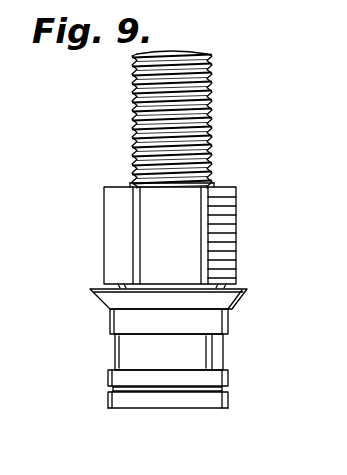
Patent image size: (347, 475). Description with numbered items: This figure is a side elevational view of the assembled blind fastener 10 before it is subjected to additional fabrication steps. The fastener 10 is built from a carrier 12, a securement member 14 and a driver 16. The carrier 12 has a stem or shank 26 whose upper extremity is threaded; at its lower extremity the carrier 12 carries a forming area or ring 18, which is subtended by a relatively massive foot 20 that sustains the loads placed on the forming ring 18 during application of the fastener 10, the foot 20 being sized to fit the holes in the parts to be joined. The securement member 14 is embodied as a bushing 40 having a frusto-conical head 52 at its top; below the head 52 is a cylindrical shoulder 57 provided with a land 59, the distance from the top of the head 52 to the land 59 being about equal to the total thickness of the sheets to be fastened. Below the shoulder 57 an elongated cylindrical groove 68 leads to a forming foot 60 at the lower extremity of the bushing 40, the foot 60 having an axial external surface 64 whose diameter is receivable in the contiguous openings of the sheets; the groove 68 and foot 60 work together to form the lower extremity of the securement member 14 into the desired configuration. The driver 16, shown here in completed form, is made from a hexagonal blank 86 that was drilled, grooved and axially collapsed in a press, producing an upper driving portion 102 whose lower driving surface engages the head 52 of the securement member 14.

The blind fastener 10 is at (172, 407).
The carrier 12 is at (214, 136).
The securement member 14 is at (233, 350).
The driver 16 is at (240, 254).
The forming area or ring 18 is at (111, 388).
The foot 20 is at (140, 410).
The stem or shank 26 is at (130, 137).
The bushing 40 is at (108, 355).
The frusto-conical head 52 is at (242, 303).
The cylindrical shoulder 57 is at (108, 316).
The land 59 is at (235, 328).
The forming foot 60 is at (110, 378).
The axial external surface 64 is at (228, 375).
The elongated cylindrical groove 68 is at (223, 358).
The blank 86 is at (236, 218).
The upper driving portion 102 is at (104, 233).